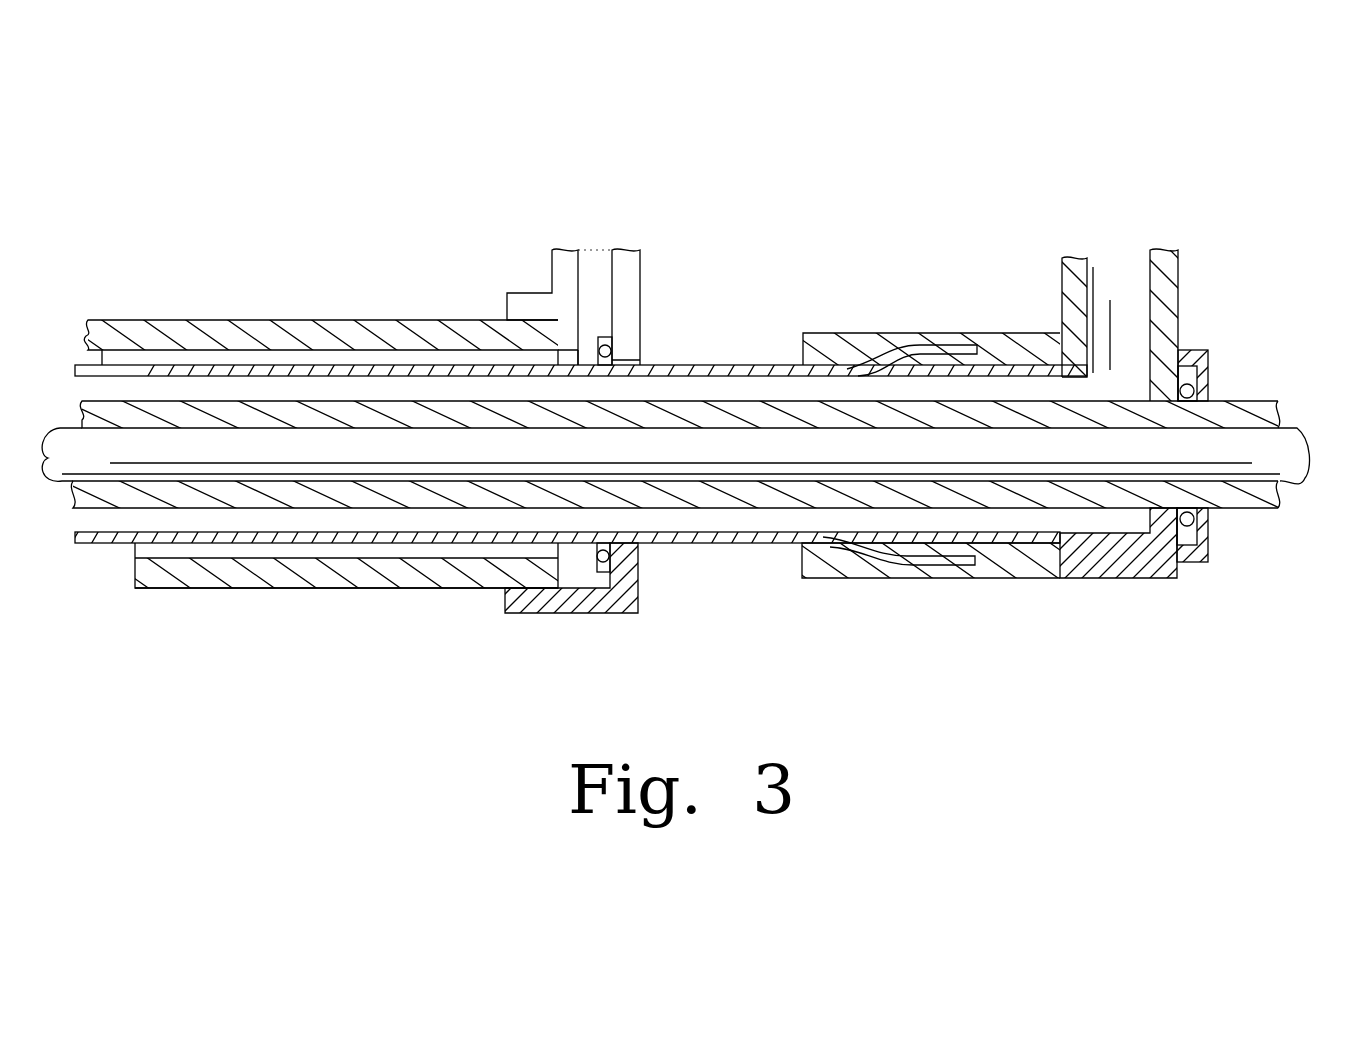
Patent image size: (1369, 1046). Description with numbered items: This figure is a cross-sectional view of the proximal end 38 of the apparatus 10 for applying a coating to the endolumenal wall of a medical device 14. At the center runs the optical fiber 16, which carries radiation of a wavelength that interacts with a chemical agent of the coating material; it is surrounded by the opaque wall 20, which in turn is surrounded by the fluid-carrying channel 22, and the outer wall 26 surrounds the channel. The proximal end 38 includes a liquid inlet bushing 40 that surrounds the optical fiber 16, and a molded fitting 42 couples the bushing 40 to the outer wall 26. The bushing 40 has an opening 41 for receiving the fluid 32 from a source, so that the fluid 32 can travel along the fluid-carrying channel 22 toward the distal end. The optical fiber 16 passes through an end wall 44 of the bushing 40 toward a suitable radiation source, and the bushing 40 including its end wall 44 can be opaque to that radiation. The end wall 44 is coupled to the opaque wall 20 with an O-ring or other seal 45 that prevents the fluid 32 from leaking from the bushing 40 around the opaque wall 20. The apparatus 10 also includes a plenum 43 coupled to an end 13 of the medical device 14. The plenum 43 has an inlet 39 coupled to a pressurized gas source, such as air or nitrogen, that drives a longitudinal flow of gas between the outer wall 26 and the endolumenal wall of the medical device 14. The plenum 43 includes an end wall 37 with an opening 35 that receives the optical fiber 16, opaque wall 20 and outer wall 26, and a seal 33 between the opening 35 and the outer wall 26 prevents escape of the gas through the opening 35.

The apparatus 10 is at (240, 210).
The end of the medical device 13 is at (543, 577).
The medical device 14 is at (208, 586).
The optical fiber 16 is at (326, 532).
The opaque wall 20 is at (143, 416).
The fluid-carrying channel 22 is at (232, 388).
The outer wall 26 is at (778, 364).
The fluid 32 is at (1122, 292).
The seal 33 is at (598, 562).
The opening 35 is at (650, 550).
The end wall 37 is at (636, 306).
The proximal end 38 is at (880, 318).
The inlet 39 is at (598, 250).
The liquid inlet bushing 40 is at (1155, 575).
The opening 41 is at (1140, 258).
The molded fitting 42 is at (1006, 334).
The plenum 43 is at (555, 278).
The end wall 44 is at (1178, 272).
The seal 45 is at (1209, 549).